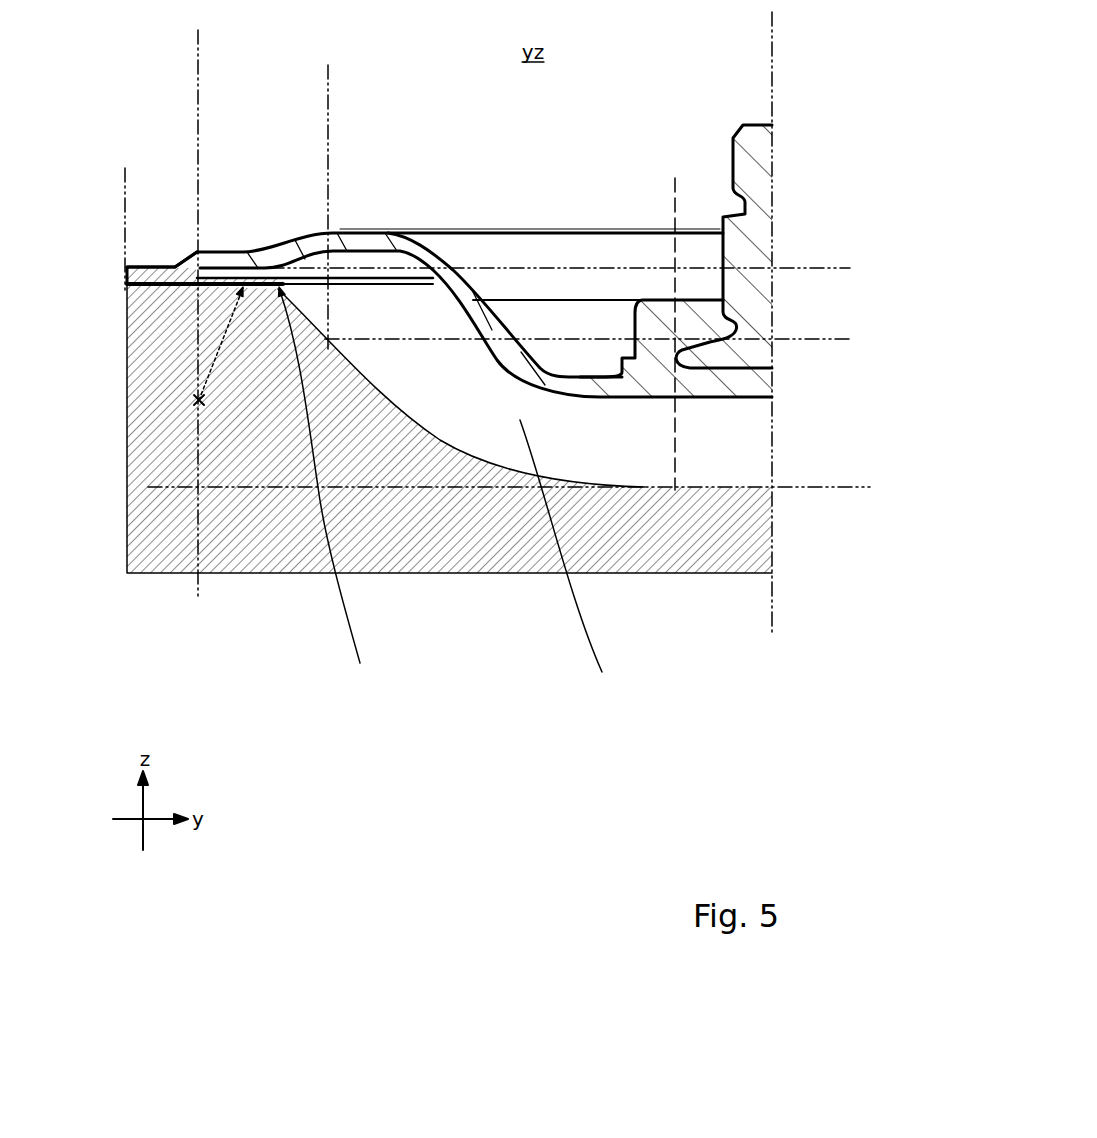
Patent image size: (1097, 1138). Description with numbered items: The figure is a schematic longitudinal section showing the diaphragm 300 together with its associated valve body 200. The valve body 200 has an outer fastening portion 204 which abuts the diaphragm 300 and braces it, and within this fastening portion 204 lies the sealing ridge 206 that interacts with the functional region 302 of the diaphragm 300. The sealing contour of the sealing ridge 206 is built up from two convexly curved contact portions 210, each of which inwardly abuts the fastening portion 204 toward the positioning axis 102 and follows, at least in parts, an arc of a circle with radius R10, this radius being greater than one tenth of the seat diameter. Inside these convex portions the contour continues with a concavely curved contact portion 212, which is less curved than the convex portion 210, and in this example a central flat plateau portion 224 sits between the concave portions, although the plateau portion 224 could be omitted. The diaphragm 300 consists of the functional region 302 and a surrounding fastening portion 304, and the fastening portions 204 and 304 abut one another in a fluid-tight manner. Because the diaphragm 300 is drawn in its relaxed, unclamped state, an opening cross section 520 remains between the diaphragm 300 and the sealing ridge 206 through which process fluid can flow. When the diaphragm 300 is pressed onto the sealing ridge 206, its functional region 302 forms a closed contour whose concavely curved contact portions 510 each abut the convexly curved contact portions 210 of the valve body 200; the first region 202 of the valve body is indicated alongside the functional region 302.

The positioning axis 102 is at (768, 57).
The valve body 200 is at (155, 528).
The first region of the first component 202 is at (772, 620).
The fastening portion 204 is at (197, 175).
The sealing ridge 206 is at (401, 399).
The convexly curved contact portion 210 is at (328, 203).
The concavely curved contact portion 212 is at (330, 203).
The plateau portion 224 is at (772, 180).
The diaphragm 300 is at (393, 230).
The functional region 302 is at (198, 620).
The fastening portion 304 is at (197, 175).
The concavely curved contact portion 510 is at (334, 494).
The opening cross section 520 is at (571, 562).
The radius R10 is at (210, 368).